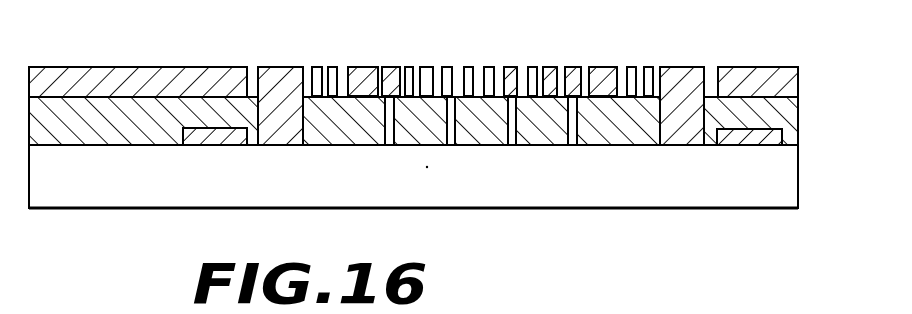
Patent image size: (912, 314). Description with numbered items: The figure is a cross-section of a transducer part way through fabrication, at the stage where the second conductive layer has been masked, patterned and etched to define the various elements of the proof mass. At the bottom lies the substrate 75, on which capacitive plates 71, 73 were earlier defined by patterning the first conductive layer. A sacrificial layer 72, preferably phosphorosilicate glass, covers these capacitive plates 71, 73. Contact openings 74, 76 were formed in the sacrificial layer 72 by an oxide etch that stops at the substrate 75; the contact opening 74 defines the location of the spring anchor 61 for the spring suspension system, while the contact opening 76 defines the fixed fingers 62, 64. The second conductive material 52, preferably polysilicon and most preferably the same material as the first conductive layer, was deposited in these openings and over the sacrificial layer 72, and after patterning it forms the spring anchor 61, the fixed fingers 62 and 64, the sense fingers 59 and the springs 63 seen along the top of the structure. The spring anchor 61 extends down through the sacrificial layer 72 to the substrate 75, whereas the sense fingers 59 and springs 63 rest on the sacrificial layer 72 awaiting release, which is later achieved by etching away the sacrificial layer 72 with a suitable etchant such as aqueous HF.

The second conductive material 52 is at (800, 73).
The sense fingers 59 is at (553, 66).
The spring anchor 61 is at (284, 66).
The fixed finger 62 is at (452, 66).
The springs 63 is at (332, 66).
The fixed finger 64 is at (472, 66).
The capacitive plate 71 is at (213, 146).
The sacrificial layer 72 is at (800, 108).
The capacitive plate 73 is at (757, 141).
The contact opening 74 is at (287, 103).
The substrate 75 is at (76, 190).
The contact opening 76 is at (572, 127).